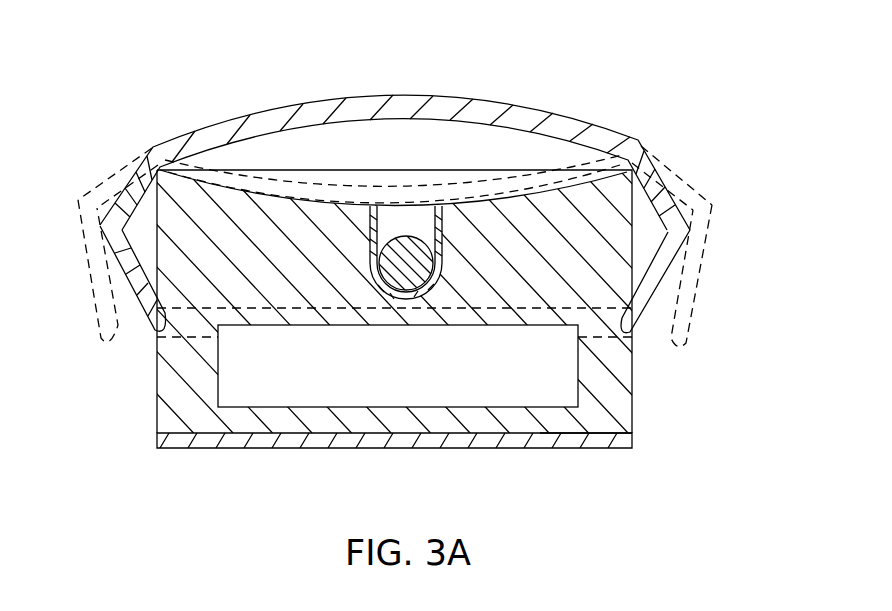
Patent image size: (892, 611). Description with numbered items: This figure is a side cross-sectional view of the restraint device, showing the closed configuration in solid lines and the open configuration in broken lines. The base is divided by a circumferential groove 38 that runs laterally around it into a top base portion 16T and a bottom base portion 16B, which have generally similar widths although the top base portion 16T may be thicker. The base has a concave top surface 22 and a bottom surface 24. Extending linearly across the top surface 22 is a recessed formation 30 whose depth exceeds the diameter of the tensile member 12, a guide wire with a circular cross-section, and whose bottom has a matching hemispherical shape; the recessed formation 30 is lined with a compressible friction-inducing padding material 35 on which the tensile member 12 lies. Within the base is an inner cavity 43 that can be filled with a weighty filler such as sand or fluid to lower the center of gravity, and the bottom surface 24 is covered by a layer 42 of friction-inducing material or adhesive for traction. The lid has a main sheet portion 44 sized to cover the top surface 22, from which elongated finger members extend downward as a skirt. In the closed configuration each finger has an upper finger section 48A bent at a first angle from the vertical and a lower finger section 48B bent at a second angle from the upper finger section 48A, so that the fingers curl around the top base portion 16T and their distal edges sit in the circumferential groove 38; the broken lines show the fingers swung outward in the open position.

The tensile member 12 is at (423, 252).
The top base portion 16T is at (617, 232).
The bottom base portion 16B is at (610, 397).
The top surface 22 is at (313, 203).
The bottom surface 24 is at (573, 438).
The recessed formation 30 is at (415, 223).
The padding material 35 is at (373, 210).
The circumferential groove 38 is at (163, 327).
The layer of friction-inducing material 42 is at (338, 447).
The inner cavity 43 is at (414, 379).
The main sheet portion 44 is at (508, 177).
The upper finger section 48A is at (668, 178).
The lower finger section 48B is at (660, 295).